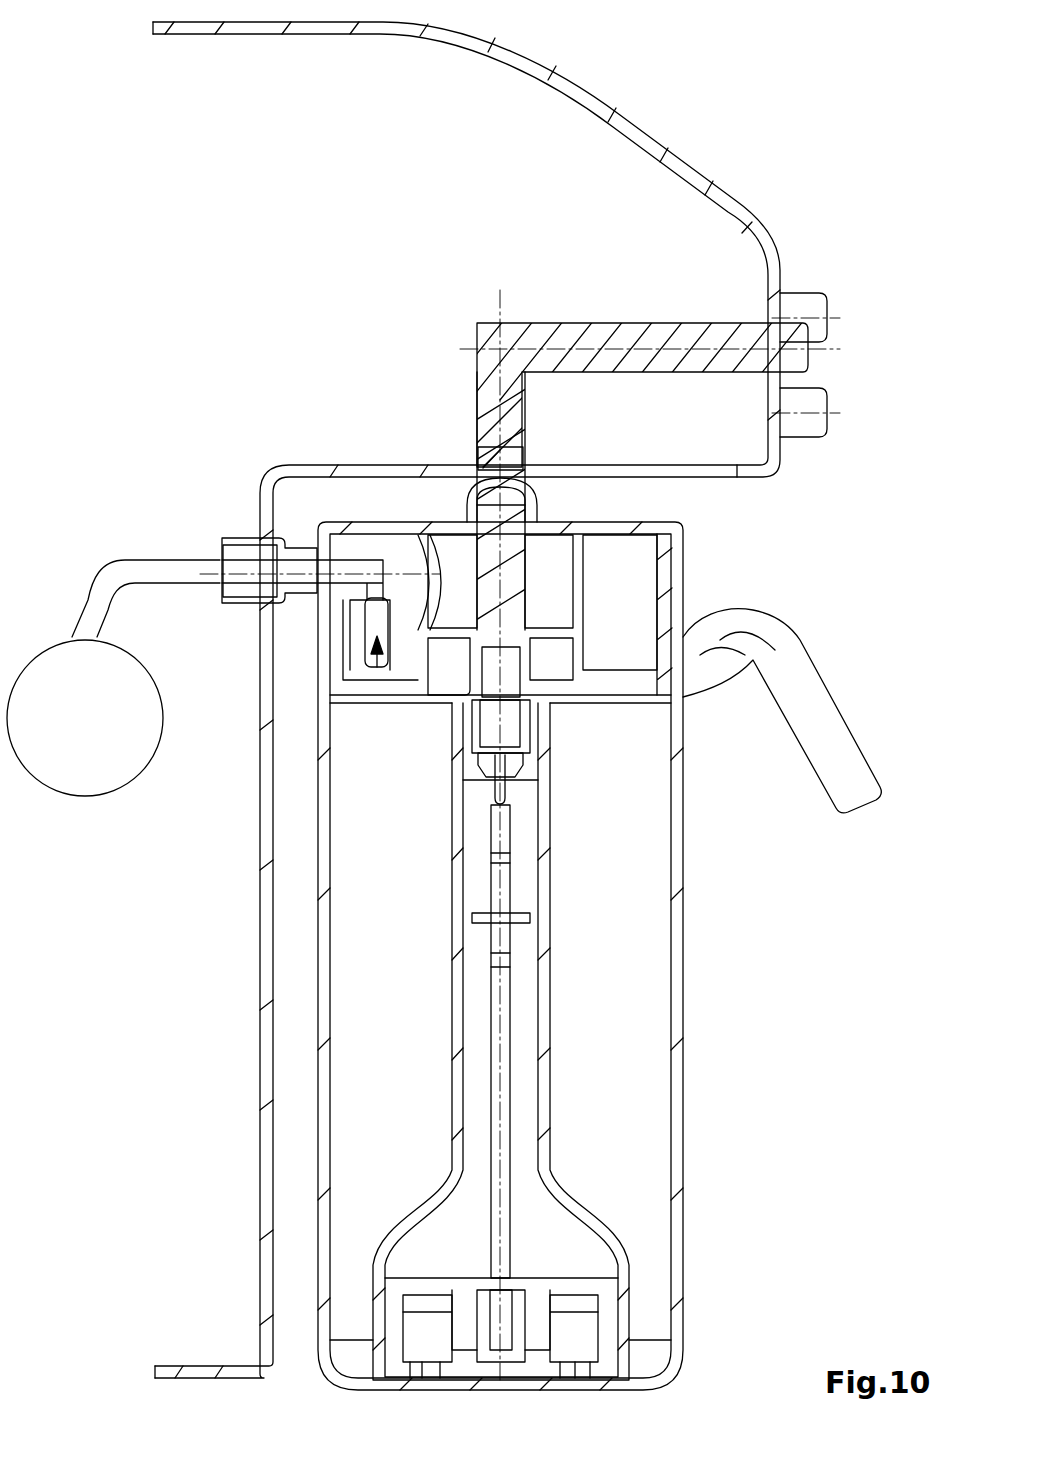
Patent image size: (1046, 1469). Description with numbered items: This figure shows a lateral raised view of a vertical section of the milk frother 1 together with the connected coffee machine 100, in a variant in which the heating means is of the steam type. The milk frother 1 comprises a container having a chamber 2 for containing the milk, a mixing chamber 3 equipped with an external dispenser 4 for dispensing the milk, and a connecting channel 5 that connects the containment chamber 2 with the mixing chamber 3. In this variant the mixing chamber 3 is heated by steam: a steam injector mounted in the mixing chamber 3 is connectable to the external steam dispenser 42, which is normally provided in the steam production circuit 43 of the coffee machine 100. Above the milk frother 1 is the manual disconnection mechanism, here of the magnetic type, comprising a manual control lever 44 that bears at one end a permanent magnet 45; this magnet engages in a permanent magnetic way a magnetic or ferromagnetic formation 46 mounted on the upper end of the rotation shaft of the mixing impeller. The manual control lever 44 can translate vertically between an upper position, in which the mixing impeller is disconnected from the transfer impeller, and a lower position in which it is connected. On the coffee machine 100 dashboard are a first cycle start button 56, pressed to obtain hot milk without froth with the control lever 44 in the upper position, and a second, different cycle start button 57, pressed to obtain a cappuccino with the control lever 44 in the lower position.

The coffee machine 100 is at (705, 108).
The manual control lever 44 is at (745, 322).
The first cycle start button 56 is at (828, 320).
The second cycle start button 57 is at (830, 410).
The permanent magnet 45 is at (490, 458).
The magnetic or ferromagnetic formation 46 is at (467, 498).
The external steam dispenser 42 is at (235, 563).
The steam production circuit 43 is at (98, 826).
The mixing chamber 3 is at (640, 593).
The external dispenser 4 is at (852, 757).
The connecting channel 5 is at (548, 910).
The chamber for containing the milk 2 is at (657, 988).
The milk frother 1 is at (734, 1124).